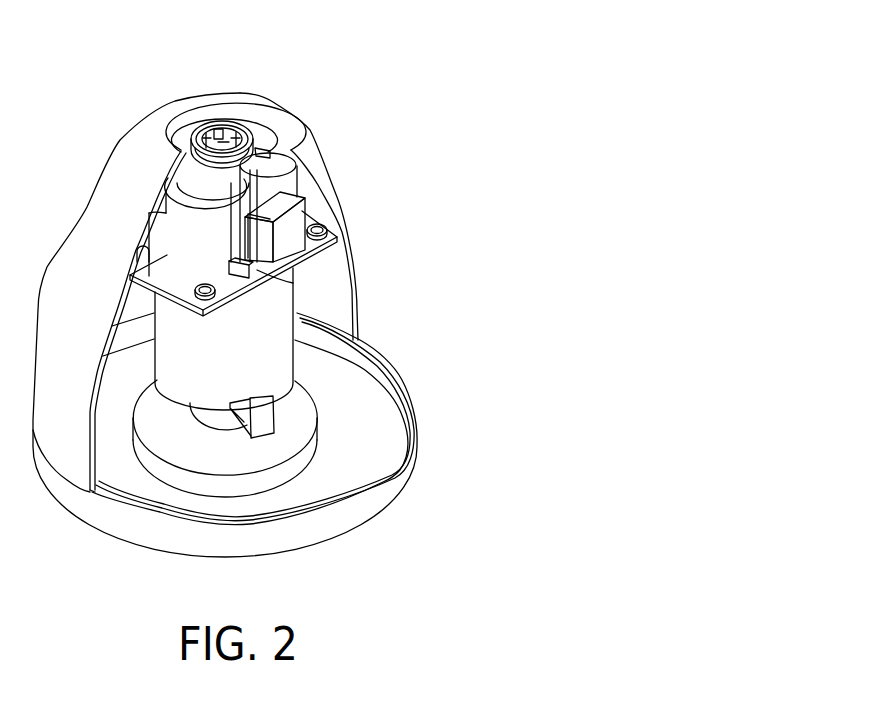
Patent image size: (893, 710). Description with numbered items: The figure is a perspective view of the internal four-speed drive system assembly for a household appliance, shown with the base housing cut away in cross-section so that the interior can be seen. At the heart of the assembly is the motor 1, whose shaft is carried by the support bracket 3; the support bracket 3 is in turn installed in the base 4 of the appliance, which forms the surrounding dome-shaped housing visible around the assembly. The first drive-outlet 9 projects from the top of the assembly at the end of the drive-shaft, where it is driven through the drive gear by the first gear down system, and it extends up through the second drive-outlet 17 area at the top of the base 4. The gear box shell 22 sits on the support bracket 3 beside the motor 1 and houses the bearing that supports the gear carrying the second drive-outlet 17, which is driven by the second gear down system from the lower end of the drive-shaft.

The motor 1 is at (272, 325).
The support bracket 3 is at (337, 237).
The base 4 is at (350, 286).
The first drive-outlet 9 is at (233, 143).
The second drive-outlet 17 is at (248, 128).
The gear box shell 22 is at (303, 206).